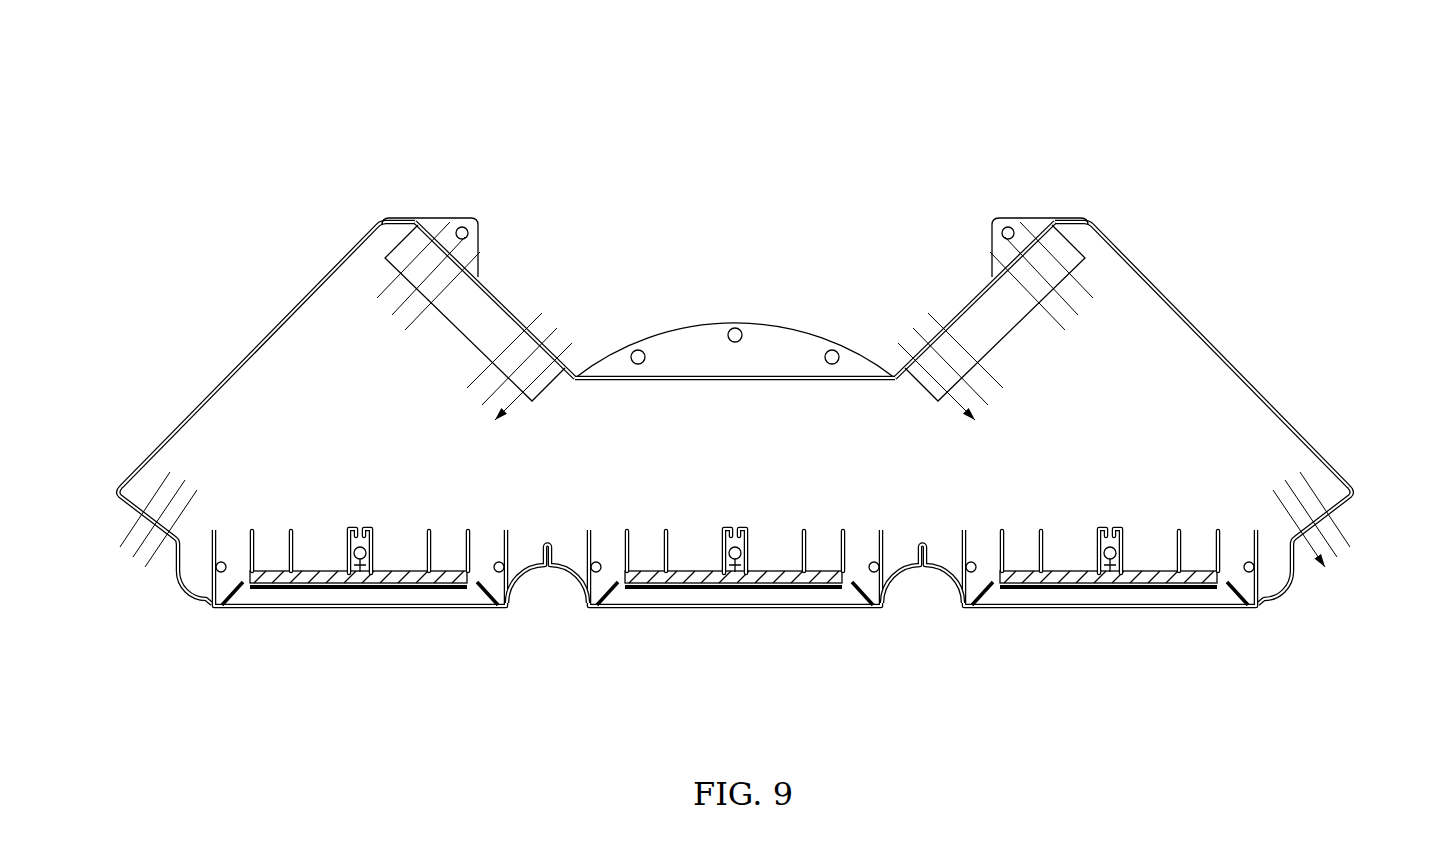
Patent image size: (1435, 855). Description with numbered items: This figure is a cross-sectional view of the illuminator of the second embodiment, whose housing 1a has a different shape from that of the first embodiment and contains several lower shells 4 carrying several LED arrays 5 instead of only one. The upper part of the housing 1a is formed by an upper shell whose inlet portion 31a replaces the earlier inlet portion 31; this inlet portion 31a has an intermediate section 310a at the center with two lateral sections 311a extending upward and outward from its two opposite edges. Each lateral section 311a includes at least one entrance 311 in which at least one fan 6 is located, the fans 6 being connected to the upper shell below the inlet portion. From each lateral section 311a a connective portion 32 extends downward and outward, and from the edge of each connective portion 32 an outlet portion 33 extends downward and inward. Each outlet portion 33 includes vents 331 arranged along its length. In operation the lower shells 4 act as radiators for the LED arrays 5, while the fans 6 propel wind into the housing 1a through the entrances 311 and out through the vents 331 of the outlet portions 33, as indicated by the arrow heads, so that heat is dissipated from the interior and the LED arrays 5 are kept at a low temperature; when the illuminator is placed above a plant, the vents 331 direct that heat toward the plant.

The housing 1a is at (1152, 275).
The lower shell 4 is at (396, 526).
The LED array 5 is at (357, 580).
The fan 6 is at (397, 238).
The inlet portion 31 is at (790, 377).
The inlet portion 31a is at (615, 80).
The intermediate section 310a is at (733, 377).
The entrance 311 is at (465, 271).
The lateral section 311a is at (500, 295).
The connective portion 32 is at (248, 353).
The outlet portion 33 is at (128, 508).
The vent 331 is at (130, 547).